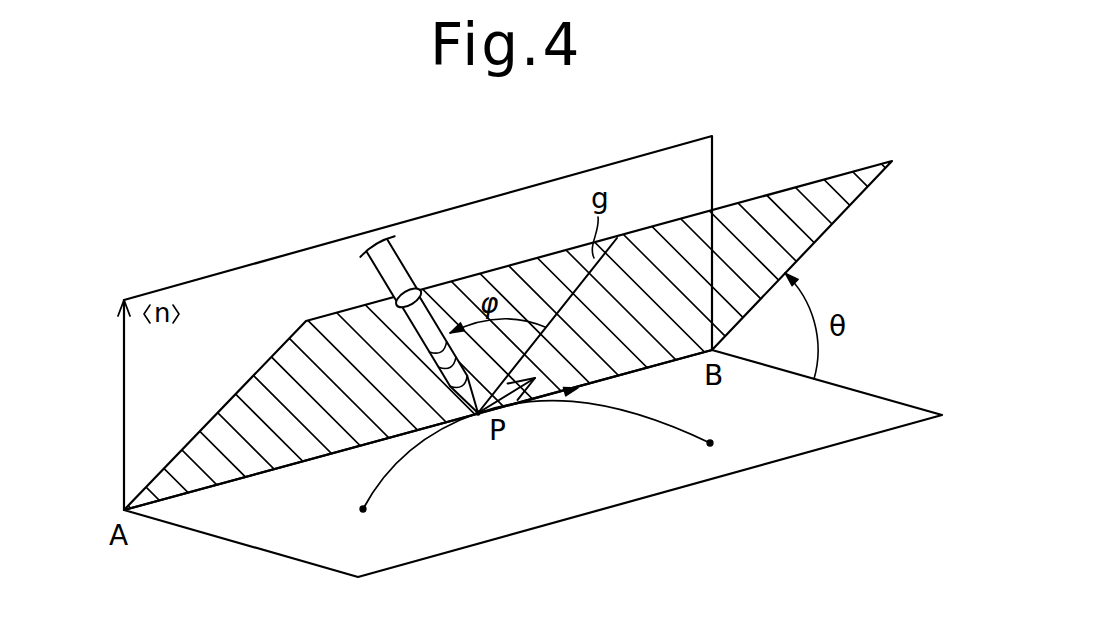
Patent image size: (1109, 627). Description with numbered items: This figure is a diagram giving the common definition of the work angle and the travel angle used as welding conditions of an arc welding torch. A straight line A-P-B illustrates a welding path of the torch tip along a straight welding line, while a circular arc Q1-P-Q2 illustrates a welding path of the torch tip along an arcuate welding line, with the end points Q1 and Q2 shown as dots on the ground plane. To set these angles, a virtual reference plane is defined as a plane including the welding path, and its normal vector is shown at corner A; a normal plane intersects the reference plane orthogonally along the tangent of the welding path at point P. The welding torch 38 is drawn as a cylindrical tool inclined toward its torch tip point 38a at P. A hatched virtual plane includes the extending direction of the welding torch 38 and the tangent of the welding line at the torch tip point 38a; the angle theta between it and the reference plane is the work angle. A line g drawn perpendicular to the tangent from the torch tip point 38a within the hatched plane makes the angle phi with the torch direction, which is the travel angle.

The welding torch 38 is at (415, 267).
The torch tip point 38a is at (478, 414).
The arcuate welding path end point Q1 is at (410, 483).
The arcuate welding path end point Q2 is at (618, 431).